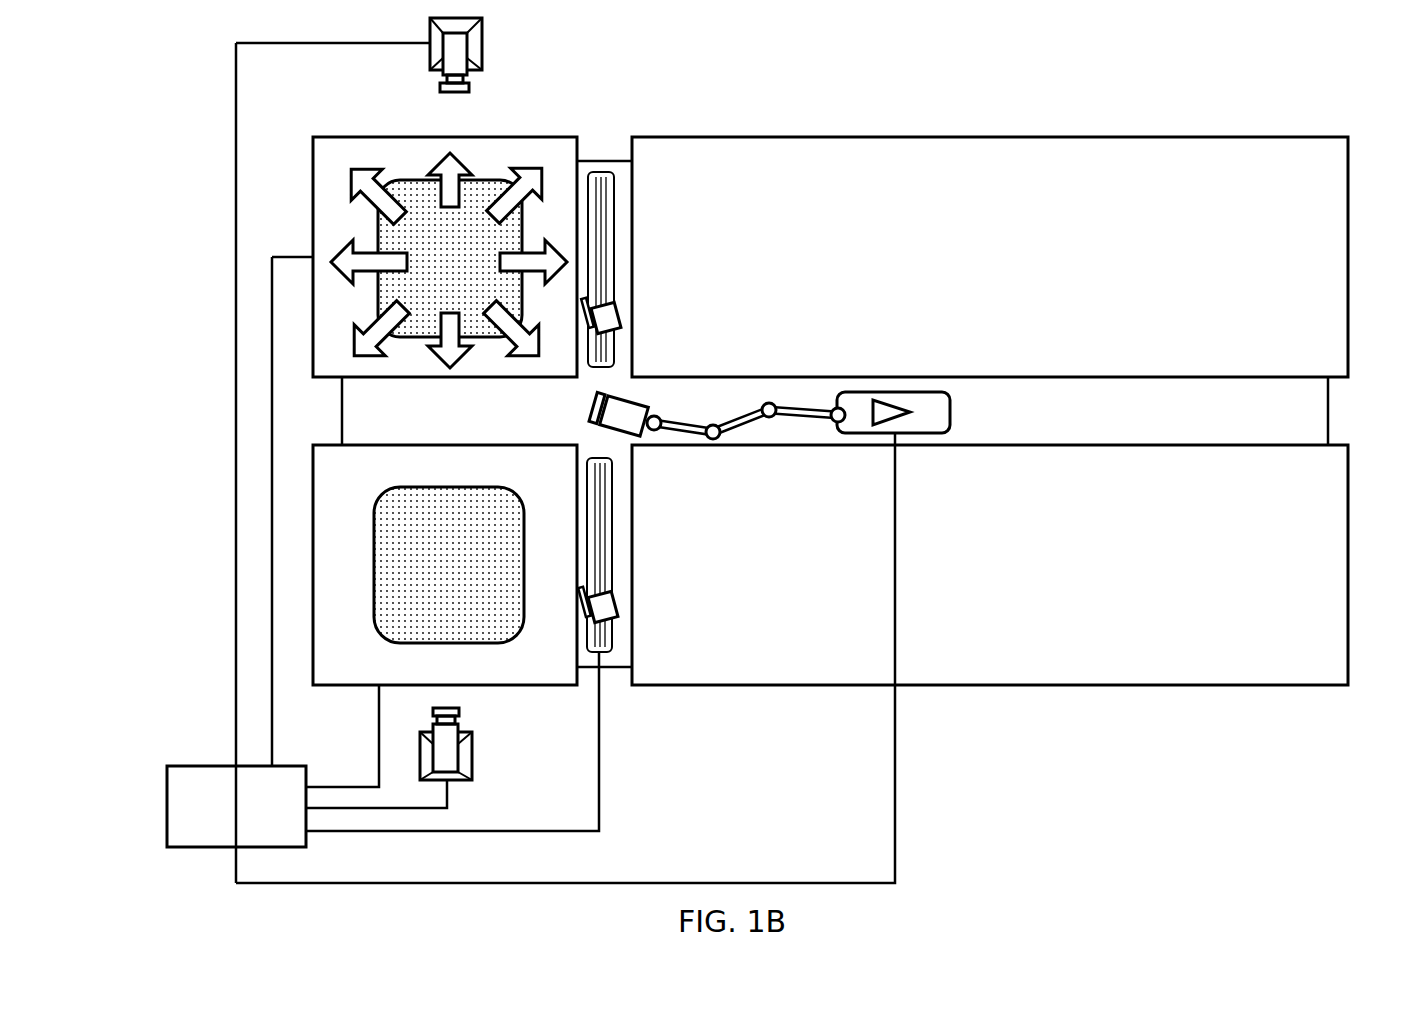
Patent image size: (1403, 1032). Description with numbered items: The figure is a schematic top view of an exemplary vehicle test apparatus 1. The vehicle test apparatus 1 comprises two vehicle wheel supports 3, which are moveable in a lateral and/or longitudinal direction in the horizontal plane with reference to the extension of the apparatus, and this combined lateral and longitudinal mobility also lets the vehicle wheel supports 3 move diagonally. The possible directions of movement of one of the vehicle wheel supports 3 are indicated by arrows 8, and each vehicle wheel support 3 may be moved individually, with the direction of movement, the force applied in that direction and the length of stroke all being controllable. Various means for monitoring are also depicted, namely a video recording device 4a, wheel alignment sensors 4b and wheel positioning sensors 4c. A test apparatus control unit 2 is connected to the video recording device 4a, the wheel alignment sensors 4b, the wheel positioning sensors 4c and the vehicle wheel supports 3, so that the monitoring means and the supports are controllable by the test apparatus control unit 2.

The vehicle test apparatus 1 is at (845, 361).
The test apparatus control unit 2 is at (219, 814).
The vehicle wheel support 3 is at (362, 419).
The video recording device 4a is at (855, 450).
The wheel alignment sensor 4b is at (606, 419).
The wheel positioning sensor 4c is at (682, 417).
The arrows 8 is at (357, 262).